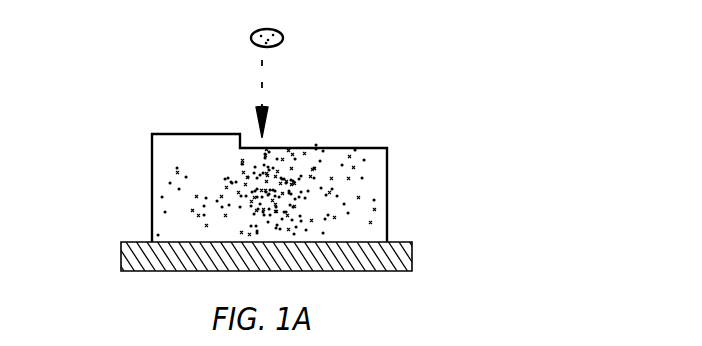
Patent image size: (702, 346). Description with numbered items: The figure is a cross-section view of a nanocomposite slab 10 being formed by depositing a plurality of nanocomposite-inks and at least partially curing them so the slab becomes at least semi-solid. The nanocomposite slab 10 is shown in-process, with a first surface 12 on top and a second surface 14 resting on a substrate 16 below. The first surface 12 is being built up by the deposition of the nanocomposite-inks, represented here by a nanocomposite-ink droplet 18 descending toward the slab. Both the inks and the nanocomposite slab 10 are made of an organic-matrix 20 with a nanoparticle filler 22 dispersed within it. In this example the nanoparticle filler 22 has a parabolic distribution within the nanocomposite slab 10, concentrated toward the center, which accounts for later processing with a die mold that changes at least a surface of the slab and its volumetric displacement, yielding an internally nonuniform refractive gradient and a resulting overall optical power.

The nanocomposite slab 10 is at (467, 267).
The first surface 12 is at (172, 134).
The second surface 14 is at (152, 240).
The substrate 16 is at (172, 271).
The nanocomposite-ink droplet 18 is at (251, 38).
The organic-matrix 20 is at (345, 170).
The nanoparticle filler 22 is at (341, 165).